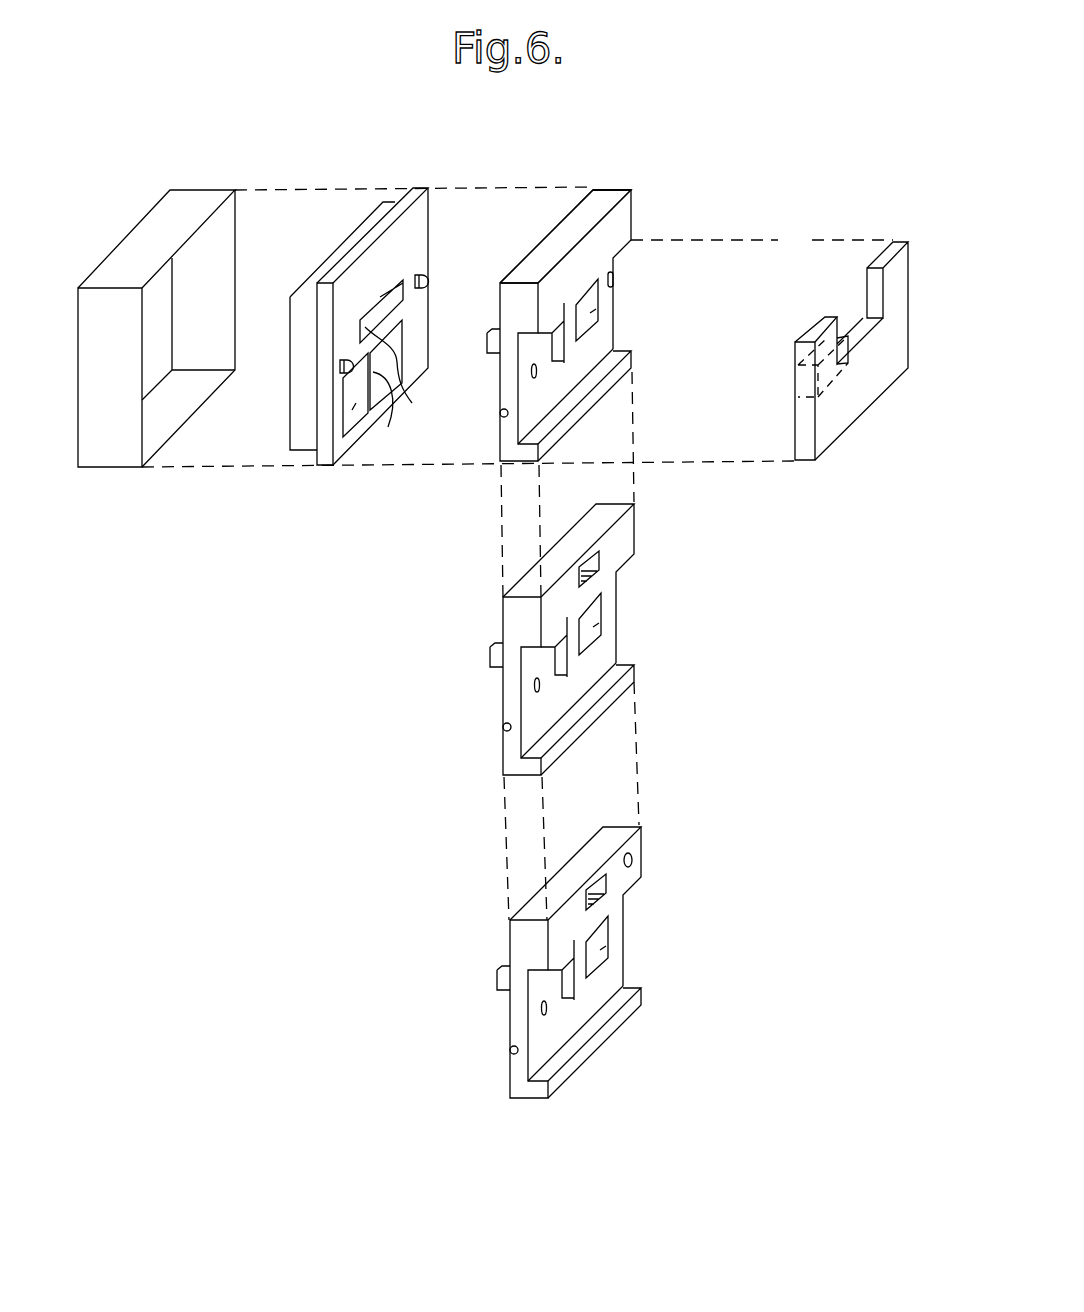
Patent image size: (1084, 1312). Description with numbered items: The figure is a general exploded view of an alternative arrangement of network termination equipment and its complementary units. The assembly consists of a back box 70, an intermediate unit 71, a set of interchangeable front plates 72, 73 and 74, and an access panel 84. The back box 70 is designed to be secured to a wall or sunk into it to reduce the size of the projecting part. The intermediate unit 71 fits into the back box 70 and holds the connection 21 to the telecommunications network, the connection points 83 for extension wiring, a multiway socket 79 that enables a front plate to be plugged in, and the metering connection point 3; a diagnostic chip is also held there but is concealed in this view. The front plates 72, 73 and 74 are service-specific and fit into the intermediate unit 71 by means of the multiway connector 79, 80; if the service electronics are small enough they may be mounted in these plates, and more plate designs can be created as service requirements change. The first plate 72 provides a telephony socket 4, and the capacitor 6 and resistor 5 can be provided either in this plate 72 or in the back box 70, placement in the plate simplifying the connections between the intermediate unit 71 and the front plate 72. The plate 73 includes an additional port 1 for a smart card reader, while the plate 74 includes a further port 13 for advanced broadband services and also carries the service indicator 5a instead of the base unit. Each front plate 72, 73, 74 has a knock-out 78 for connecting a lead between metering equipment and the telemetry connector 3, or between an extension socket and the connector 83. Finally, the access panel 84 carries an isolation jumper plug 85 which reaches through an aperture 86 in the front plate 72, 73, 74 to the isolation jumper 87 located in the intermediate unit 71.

The port for a smart card reader 1 is at (600, 562).
The metering connection point 3 is at (323, 441).
The telephony socket 4 is at (597, 313).
The resistor 5 is at (571, 205).
The capacitor 6 is at (565, 236).
The service indicator 5a is at (636, 858).
The port for advanced broadband services 13 is at (597, 958).
The connection to the telecommunications network 21 is at (290, 394).
The back box 70 is at (162, 196).
The intermediate unit 71 is at (415, 188).
The first front plate 72 is at (618, 184).
The front plate 73 is at (517, 774).
The front plate 74 is at (518, 1093).
The knock-out 78 is at (502, 412).
The multiway socket 79 is at (405, 375).
The multiway connector 80 is at (490, 347).
The connection points for extension wiring 83 is at (372, 409).
The access panel 84 is at (893, 370).
The isolation jumper plug 85 is at (845, 336).
The aperture 86 is at (583, 358).
The isolation jumper 87 is at (388, 427).